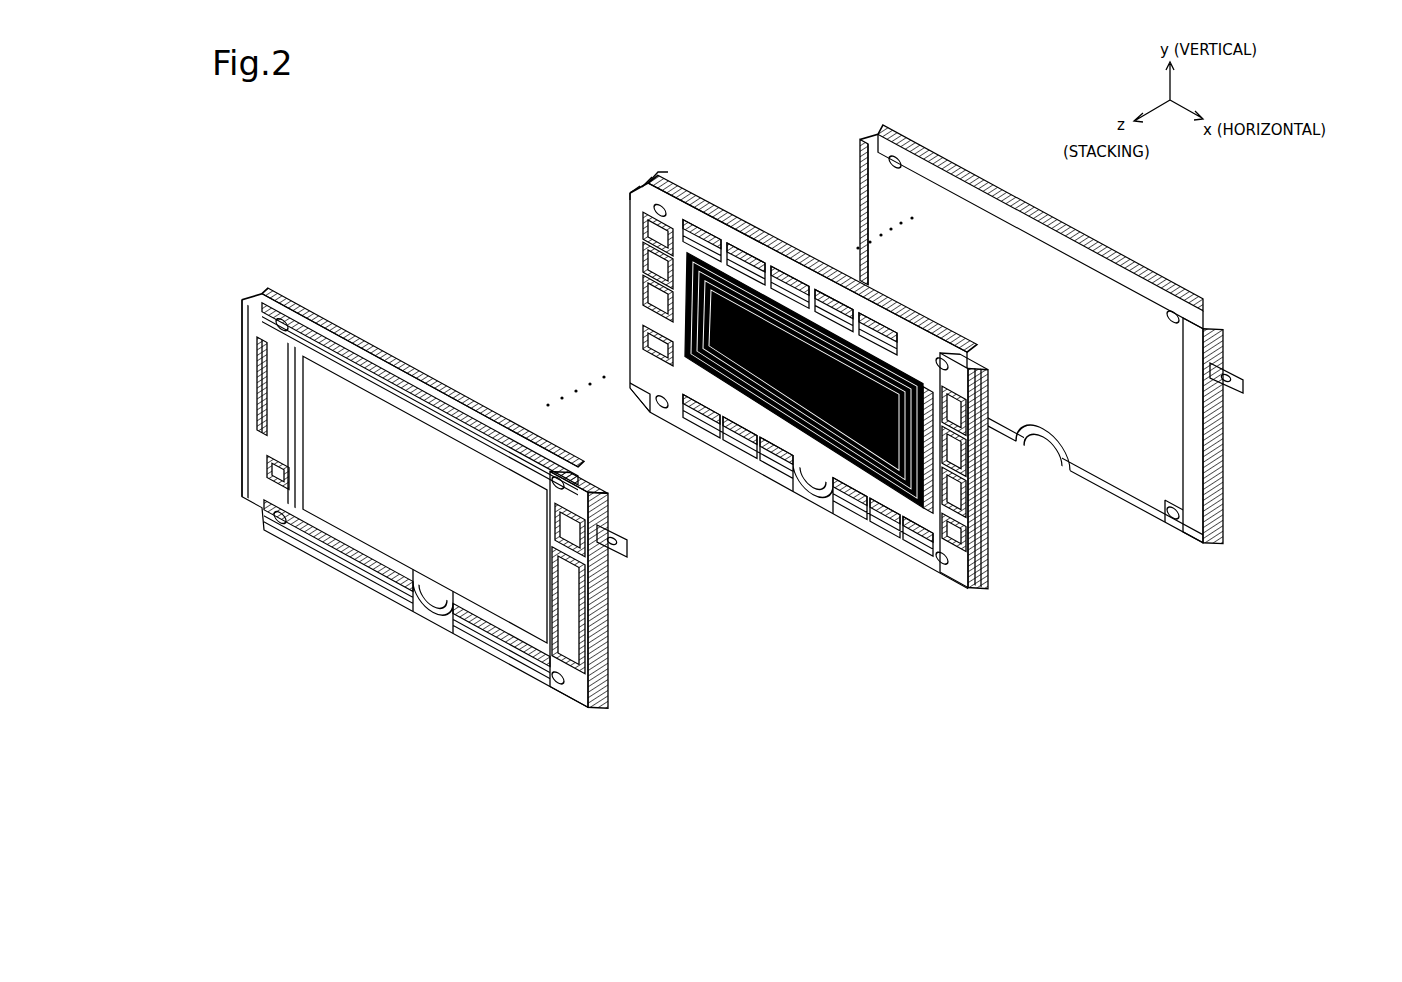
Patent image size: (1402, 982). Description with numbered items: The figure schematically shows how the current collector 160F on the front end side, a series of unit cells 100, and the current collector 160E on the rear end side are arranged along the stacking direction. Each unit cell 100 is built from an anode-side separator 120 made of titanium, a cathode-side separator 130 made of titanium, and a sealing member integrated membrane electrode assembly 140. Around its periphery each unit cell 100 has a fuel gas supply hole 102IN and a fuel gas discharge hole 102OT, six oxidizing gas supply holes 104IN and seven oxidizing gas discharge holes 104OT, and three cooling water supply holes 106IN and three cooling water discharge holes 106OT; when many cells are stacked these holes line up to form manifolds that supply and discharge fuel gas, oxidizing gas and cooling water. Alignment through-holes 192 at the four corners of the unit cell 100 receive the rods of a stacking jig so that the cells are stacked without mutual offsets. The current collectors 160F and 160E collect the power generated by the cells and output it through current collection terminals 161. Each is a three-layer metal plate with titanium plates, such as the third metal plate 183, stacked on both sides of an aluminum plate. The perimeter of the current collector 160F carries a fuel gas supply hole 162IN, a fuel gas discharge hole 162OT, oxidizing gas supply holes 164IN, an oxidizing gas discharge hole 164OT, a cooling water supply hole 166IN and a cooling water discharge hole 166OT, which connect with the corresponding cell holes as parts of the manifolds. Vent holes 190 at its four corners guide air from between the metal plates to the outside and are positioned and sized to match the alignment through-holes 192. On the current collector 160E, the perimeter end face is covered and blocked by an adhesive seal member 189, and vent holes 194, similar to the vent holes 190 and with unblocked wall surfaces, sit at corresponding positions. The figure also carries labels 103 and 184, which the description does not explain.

The unit cell 100 is at (769, 177).
The fuel gas supply hole 102IN is at (972, 500).
The fuel gas discharge hole 102OT is at (644, 342).
The corner portion of separator 103 is at (642, 382).
The oxidizing gas supply holes 104IN is at (918, 527).
The oxidizing gas discharge holes 104OT is at (878, 320).
The cooling water supply holes 106IN is at (970, 515).
The cooling water discharge holes 106OT is at (642, 300).
The anode-side separator 120 is at (636, 200).
The cathode-side separator 130 is at (648, 180).
The sealing member integrated membrane electrode assembly 140 is at (638, 178).
The current collector 160E is at (879, 113).
The current collector 160F is at (258, 270).
The current collection terminal 161 is at (632, 548).
The fuel gas supply hole 162IN is at (556, 520).
The fuel gas discharge hole 162OT is at (292, 481).
The oxidizing gas supply holes 164IN is at (460, 597).
The oxidizing gas discharge hole 164OT is at (400, 397).
The cooling water supply hole 166IN is at (555, 575).
The cooling water discharge hole 166OT is at (275, 372).
The third metal plate 183 is at (296, 300).
The side frame portion of end plate 184 is at (252, 297).
The adhesive seal member 189 is at (890, 124).
The vent holes 190 is at (274, 330).
The alignment through-holes 192 is at (650, 212).
The vent holes 194 is at (888, 163).